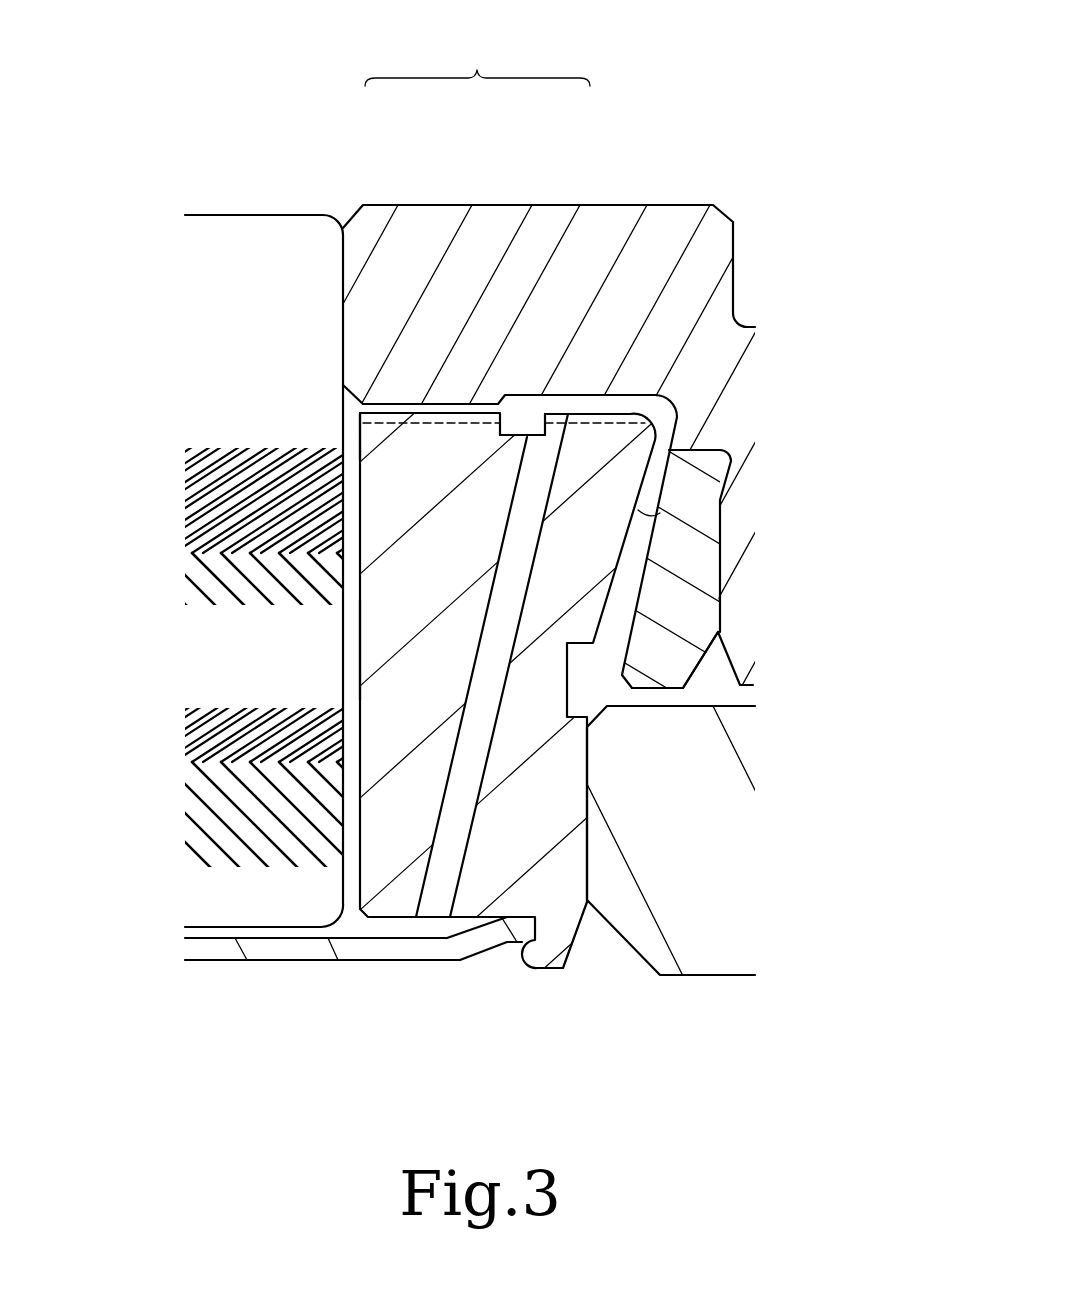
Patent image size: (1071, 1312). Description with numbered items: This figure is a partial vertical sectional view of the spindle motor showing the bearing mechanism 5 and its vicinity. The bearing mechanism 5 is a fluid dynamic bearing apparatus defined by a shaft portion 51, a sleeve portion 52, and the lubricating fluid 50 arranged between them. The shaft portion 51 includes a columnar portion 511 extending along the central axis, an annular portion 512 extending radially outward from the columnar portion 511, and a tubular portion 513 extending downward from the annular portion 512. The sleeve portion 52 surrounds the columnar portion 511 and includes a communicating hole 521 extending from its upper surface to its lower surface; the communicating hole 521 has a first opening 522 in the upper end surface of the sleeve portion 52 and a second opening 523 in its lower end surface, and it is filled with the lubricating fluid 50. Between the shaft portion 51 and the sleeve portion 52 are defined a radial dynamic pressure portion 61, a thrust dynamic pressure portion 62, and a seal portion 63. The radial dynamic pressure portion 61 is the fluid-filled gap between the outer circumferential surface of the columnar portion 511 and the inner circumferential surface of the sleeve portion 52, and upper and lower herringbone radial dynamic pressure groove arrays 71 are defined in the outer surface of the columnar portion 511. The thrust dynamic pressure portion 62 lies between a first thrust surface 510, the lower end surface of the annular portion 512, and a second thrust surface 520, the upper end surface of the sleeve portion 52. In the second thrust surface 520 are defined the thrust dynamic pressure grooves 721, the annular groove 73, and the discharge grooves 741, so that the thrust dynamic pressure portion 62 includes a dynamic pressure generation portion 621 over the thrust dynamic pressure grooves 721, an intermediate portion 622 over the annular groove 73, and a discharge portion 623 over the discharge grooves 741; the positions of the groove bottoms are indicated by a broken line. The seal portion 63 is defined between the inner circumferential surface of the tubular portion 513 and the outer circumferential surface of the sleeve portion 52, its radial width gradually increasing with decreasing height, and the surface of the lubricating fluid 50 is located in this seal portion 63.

The bearing mechanism 5 is at (235, 1000).
The lubricating fluid 50 is at (650, 487).
The shaft portion 51 is at (296, 198).
The sleeve portion 52 is at (381, 893).
The radial dynamic pressure portion 61 is at (352, 641).
The thrust dynamic pressure portion 62 is at (477, 67).
The seal portion 63 is at (722, 590).
The radial dynamic pressure groove arrays 71 is at (225, 515).
The annular groove 73 is at (511, 406).
The first thrust surface 510 is at (622, 399).
The columnar portion 511 is at (230, 265).
The annular portion 512 is at (600, 250).
The tubular portion 513 is at (690, 548).
The second thrust surface 520 is at (382, 412).
The communicating hole 521 is at (480, 726).
The first opening 522 is at (550, 415).
The second opening 523 is at (438, 922).
The dynamic pressure generation portion 621 is at (413, 406).
The intermediate portion 622 is at (530, 418).
The discharge portion 623 is at (603, 401).
The thrust dynamic pressure grooves 721 is at (427, 418).
The discharge grooves 741 is at (618, 418).